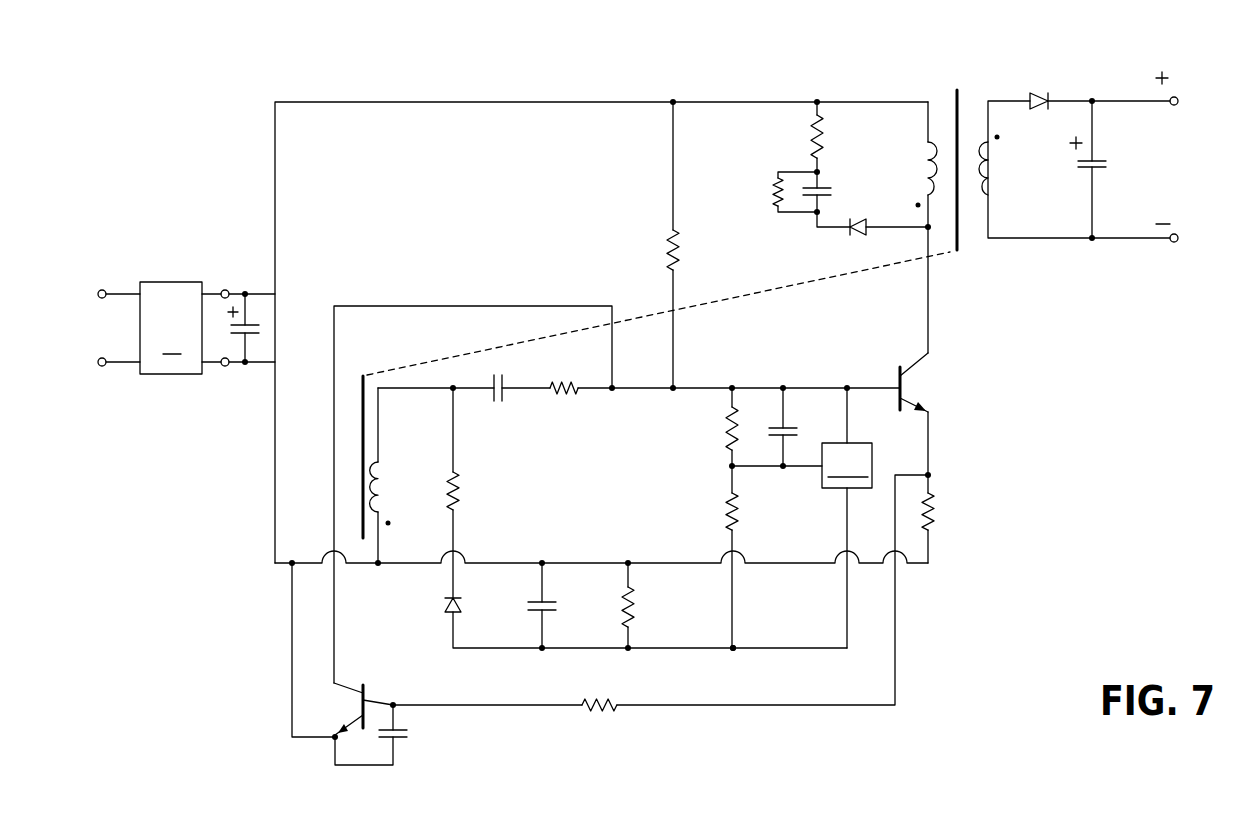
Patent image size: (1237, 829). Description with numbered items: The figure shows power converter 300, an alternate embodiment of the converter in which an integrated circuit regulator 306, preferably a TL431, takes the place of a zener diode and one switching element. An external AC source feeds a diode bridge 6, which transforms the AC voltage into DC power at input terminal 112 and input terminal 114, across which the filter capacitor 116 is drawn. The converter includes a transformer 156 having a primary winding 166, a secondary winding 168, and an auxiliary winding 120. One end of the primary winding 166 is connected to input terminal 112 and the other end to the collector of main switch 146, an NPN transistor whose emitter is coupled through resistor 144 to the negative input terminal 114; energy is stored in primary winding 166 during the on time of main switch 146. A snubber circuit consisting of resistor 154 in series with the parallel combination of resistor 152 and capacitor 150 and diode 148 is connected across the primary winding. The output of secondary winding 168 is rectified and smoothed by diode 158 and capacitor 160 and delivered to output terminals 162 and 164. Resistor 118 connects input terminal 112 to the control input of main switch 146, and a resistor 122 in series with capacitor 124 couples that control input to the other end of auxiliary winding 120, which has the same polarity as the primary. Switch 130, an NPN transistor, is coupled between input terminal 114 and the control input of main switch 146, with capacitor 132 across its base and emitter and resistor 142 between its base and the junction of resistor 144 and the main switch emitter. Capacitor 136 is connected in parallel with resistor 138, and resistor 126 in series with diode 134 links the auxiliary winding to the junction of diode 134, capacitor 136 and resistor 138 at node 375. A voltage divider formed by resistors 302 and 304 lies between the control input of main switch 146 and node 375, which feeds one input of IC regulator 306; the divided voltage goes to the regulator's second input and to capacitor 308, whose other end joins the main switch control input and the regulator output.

The power converter 300 is at (294, 64).
The diode bridge 6 is at (167, 308).
The input terminal 112 is at (224, 289).
The input terminal 114 is at (225, 367).
The filter capacitor 116 is at (260, 326).
The resistor 118 is at (668, 238).
The auxiliary winding 120 is at (383, 486).
The resistor 122 is at (586, 396).
The capacitor 124 is at (503, 400).
The resistor 126 is at (459, 490).
The switch 130 is at (368, 692).
The capacitor 132 is at (405, 740).
The diode 134 is at (445, 605).
The capacitor 136 is at (530, 605).
The resistor 138 is at (623, 605).
The resistor 142 is at (605, 715).
The resistor 144 is at (936, 510).
The main switch 146 is at (915, 395).
The diode 148 is at (850, 233).
The capacitor 150 is at (832, 183).
The resistor 152 is at (770, 192).
The resistor 154 is at (810, 126).
The transformer 156 is at (955, 92).
The diode 158 is at (1035, 97).
The capacitor 160 is at (1098, 160).
The output terminal 162 is at (1177, 95).
The output terminal 164 is at (1171, 244).
The primary winding 166 is at (930, 160).
The secondary winding 168 is at (992, 182).
The resistor 302 is at (728, 515).
The resistor 304 is at (728, 425).
The integrated circuit regulator 306 is at (873, 455).
The capacitor 308 is at (790, 425).
The node 375 is at (735, 652).